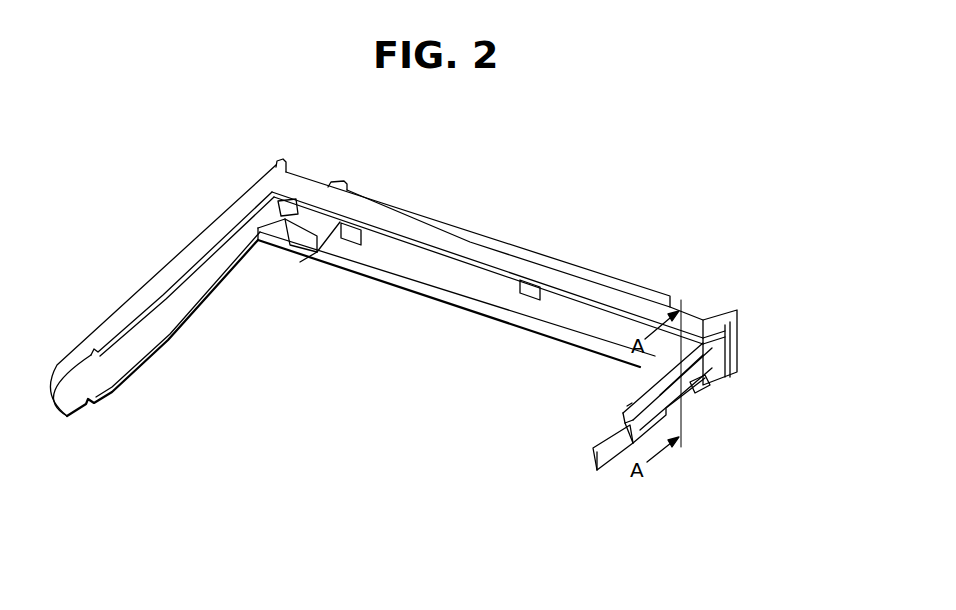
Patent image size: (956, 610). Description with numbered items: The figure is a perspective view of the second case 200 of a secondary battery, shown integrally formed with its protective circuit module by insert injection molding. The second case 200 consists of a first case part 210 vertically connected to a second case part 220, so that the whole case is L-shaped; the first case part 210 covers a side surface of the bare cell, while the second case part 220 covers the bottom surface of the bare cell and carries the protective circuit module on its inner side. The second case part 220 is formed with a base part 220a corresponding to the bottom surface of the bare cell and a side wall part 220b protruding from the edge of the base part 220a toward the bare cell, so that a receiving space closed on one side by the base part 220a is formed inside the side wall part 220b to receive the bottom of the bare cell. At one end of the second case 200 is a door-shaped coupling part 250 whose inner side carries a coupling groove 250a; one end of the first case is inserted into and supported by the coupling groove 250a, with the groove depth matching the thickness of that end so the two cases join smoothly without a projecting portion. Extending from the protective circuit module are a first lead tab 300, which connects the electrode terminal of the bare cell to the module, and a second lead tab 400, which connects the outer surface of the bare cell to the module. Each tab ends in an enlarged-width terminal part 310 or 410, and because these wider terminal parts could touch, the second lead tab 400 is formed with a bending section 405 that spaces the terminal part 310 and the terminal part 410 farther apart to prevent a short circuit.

The second case 200 is at (394, 184).
The first case part 210 is at (474, 250).
The second case part 220 is at (268, 358).
The base part 220a is at (100, 367).
The side wall part 220b is at (166, 339).
The coupling part 250 is at (729, 316).
The coupling groove 250a is at (731, 348).
The first lead tab 300 is at (711, 387).
The terminal part 310 is at (626, 405).
The second lead tab 400 is at (643, 387).
The bending section 405 is at (622, 415).
The terminal part 410 is at (603, 460).